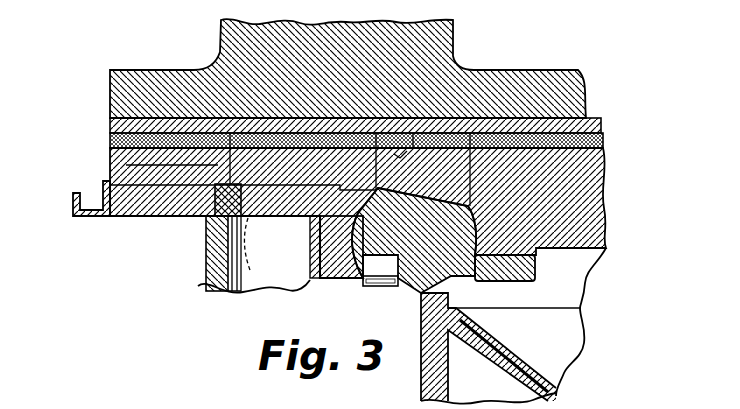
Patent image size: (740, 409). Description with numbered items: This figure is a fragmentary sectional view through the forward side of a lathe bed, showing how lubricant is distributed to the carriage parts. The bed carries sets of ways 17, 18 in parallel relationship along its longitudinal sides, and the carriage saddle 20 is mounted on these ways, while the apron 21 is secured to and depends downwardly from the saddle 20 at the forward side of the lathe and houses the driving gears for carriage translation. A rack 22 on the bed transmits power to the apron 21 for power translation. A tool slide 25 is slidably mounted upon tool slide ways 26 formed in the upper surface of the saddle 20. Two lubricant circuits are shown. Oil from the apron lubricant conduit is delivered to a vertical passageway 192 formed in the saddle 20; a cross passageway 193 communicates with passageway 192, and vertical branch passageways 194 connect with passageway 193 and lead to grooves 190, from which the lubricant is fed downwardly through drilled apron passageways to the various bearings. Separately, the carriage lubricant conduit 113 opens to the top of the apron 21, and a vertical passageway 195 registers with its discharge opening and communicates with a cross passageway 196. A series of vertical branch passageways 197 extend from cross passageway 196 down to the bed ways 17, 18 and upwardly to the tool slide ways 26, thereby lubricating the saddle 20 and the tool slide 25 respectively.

The way 17 is at (340, 270).
The way 18 is at (462, 250).
The saddle 20 is at (598, 165).
The apron 21 is at (195, 280).
The rack 22 is at (381, 278).
The tool slide 25 is at (577, 62).
The tool slide ways 26 is at (586, 108).
The carriage lubricant conduit 113 is at (200, 234).
The groove 190 is at (200, 207).
The vertical passageway 192 is at (148, 200).
The cross passageway 193 is at (259, 253).
The vertical branch passageway 194 is at (277, 210).
The vertical passageway 195 is at (118, 157).
The cross passageway 196 is at (132, 128).
The vertical branch passageway 197 is at (399, 143).